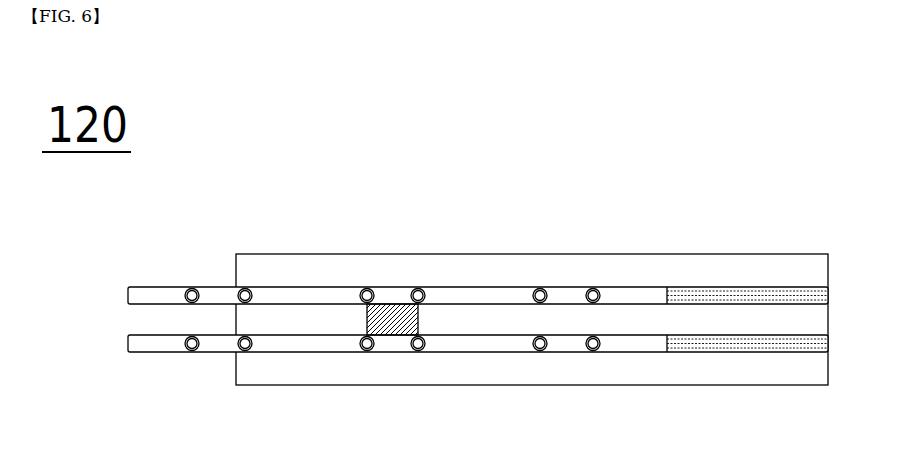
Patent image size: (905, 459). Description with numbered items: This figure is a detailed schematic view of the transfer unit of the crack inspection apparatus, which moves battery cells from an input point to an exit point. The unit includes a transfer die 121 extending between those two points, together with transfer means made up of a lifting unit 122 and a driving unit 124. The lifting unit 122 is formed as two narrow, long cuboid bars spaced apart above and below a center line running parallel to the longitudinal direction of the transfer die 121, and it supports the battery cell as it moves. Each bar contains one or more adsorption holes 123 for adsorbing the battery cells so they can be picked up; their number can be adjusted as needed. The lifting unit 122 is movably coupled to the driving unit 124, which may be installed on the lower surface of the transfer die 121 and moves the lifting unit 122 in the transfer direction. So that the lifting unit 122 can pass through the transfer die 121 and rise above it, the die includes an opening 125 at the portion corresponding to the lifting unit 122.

The transfer die 121 is at (639, 275).
The lifting unit 122 is at (153, 297).
The adsorption hole 123 is at (192, 289).
The driving unit 124 is at (395, 317).
The opening 125 is at (725, 295).